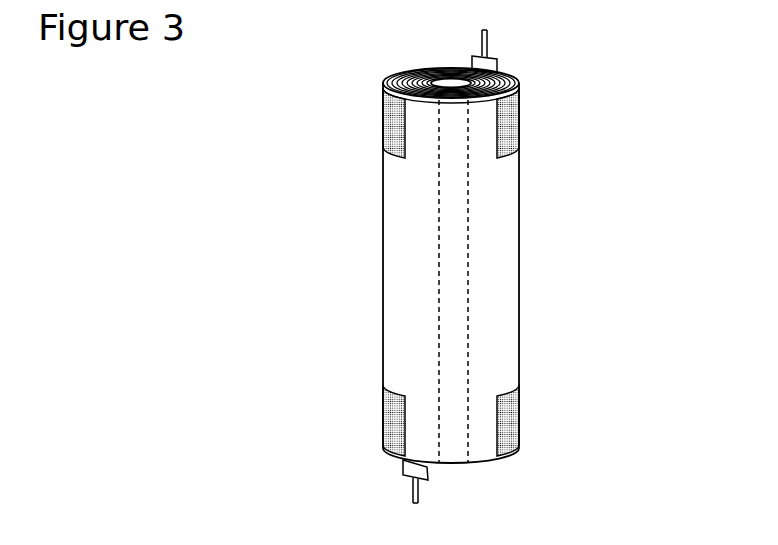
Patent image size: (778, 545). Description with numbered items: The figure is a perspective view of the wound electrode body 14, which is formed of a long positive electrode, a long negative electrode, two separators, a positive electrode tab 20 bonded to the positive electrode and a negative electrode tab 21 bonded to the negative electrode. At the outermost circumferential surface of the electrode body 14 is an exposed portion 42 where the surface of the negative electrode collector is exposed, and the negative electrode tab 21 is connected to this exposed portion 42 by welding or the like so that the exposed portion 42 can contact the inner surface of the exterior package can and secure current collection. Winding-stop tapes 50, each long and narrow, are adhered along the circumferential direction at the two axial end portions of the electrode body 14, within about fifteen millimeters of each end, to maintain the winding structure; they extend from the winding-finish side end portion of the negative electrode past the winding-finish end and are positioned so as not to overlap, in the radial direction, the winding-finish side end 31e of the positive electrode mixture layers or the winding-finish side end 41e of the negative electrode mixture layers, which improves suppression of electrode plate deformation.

The electrode body 14 is at (396, 75).
The positive electrode tab 20 is at (497, 62).
The negative electrode tab 21 is at (406, 465).
The tape 50 is at (510, 125).
The winding-finish side end of the positive electrode mixture layers 31e is at (439, 248).
The winding-finish side end of the negative electrode mixture layers 41e is at (439, 248).
The exposed portion 42 is at (402, 293).